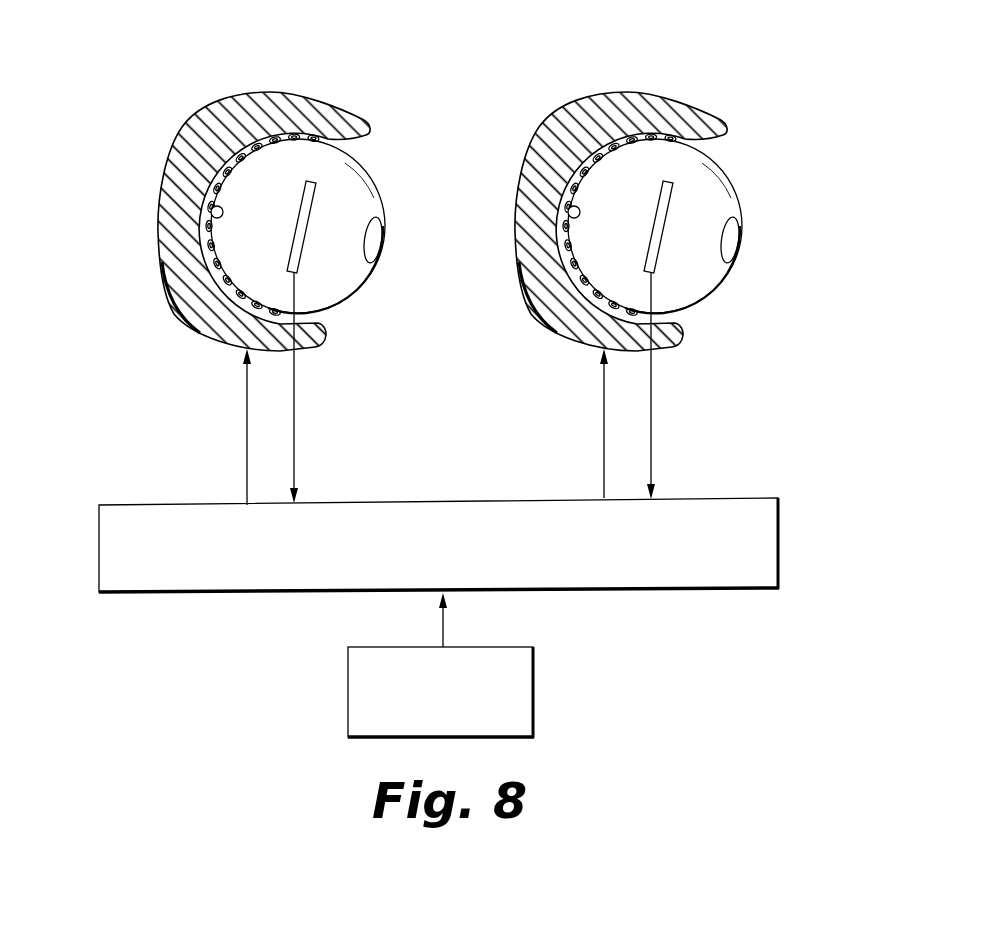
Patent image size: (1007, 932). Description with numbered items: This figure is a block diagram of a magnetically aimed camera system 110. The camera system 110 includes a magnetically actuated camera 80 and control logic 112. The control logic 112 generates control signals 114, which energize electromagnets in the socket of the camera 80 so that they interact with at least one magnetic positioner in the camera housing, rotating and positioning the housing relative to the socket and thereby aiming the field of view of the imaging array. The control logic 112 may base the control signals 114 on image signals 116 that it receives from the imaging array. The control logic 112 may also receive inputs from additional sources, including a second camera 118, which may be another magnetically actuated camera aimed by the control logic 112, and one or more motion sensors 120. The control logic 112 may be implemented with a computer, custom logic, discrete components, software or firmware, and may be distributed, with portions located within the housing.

The camera system 110 is at (237, 735).
The second camera 118 is at (323, 90).
The magnetically actuated camera 80 is at (638, 196).
The control signals 114 is at (247, 411).
The image signals 116 is at (295, 405).
The control logic 112 is at (721, 497).
The motion sensors 120 is at (535, 693).